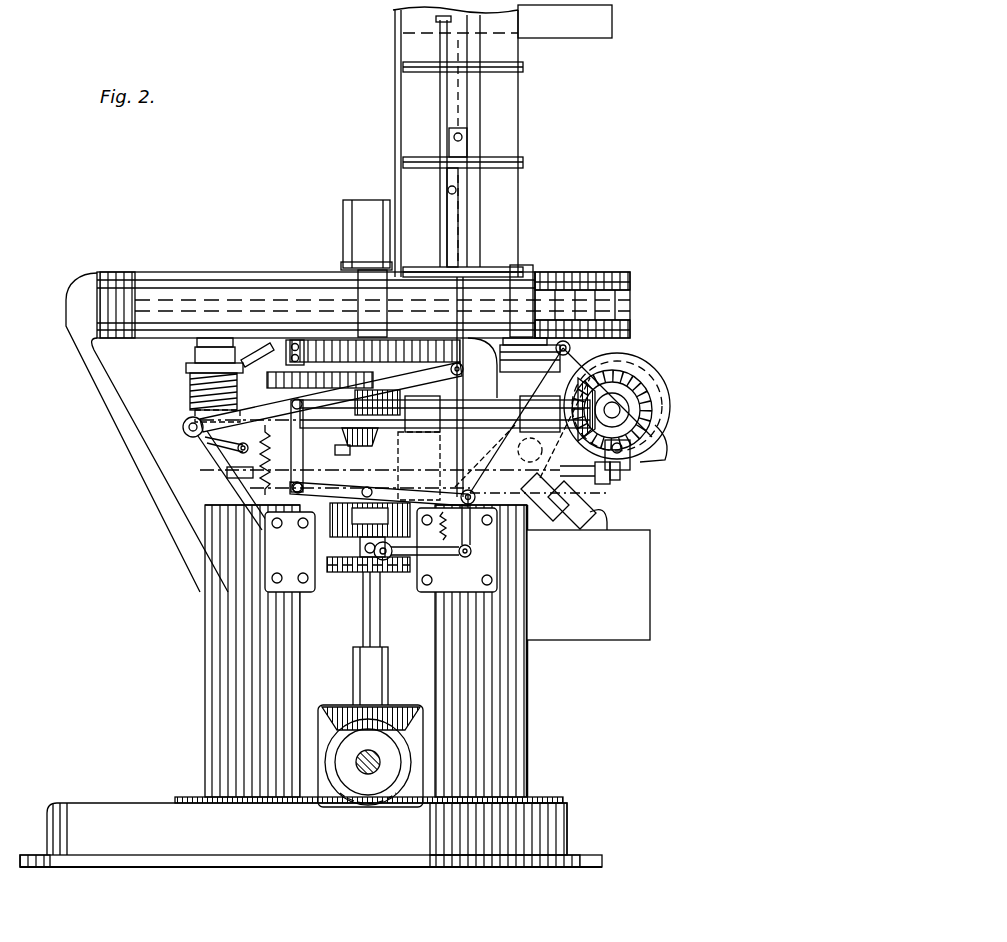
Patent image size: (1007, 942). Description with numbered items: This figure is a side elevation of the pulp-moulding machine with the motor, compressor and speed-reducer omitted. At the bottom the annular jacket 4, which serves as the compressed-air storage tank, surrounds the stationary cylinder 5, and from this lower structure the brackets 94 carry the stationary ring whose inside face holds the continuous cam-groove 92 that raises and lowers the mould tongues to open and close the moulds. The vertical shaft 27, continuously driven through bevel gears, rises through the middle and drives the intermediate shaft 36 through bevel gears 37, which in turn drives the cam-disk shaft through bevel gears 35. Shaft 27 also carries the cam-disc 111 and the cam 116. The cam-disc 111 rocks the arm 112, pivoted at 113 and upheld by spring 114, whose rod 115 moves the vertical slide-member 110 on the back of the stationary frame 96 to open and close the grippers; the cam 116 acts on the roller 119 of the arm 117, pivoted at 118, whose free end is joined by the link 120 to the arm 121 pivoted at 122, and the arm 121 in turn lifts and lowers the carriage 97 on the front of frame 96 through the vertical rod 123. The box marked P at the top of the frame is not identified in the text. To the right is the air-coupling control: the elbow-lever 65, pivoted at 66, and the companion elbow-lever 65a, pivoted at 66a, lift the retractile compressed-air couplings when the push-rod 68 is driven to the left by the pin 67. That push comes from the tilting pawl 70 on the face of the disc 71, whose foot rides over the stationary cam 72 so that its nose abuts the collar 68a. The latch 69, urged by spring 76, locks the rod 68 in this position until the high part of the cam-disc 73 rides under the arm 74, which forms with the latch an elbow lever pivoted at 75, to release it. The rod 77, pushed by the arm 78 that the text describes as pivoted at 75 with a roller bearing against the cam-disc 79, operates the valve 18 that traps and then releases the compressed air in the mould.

The support post P is at (565, 21).
The stationary vertical frame 96 is at (513, 131).
The vertical slide-member 110 is at (466, 100).
The vertically slidable carriage 97 is at (470, 183).
The rod 115 is at (463, 236).
The vertical rod 123 is at (455, 223).
The cam-groove 92 is at (283, 300).
The brackets 94 is at (618, 272).
The annular jacket 4 is at (212, 632).
The cam 116 is at (322, 532).
The spring 114 is at (444, 548).
The pivot 75 is at (541, 492).
The roller 119 is at (378, 529).
The arm 112 is at (407, 560).
The cam-disc 111 is at (342, 572).
The shaft 27 is at (381, 629).
The arm 117 is at (330, 504).
The pin 67 is at (460, 500).
The pivot 118 is at (478, 550).
The pivot 113 is at (400, 560).
The valve 18 is at (257, 367).
The stationary cylinder 5 is at (284, 388).
The pivot 122 is at (188, 432).
The arm 121 is at (331, 397).
The link 120 is at (303, 450).
The pivot 66a is at (238, 450).
The elbow-lever 65a is at (255, 459).
The elbow-lever 65 is at (343, 448).
The bevel gears 37 is at (358, 428).
The pivot 66 is at (405, 448).
The intermediate shaft 36 is at (489, 368).
The rod 77 is at (505, 343).
The pivot bracket 78 is at (560, 356).
The bevel gears 35 is at (622, 397).
The cam-disc 73 is at (663, 373).
The stationary cam 72 is at (640, 418).
The cam-disc 79 is at (655, 430).
The disc 71 is at (651, 436).
The tilting pawl 70 is at (628, 456).
The push-rod 68 is at (583, 477).
The collar 68a is at (612, 480).
The latch 69 is at (565, 428).
The spring 76 is at (487, 456).
The arm 74 is at (524, 459).